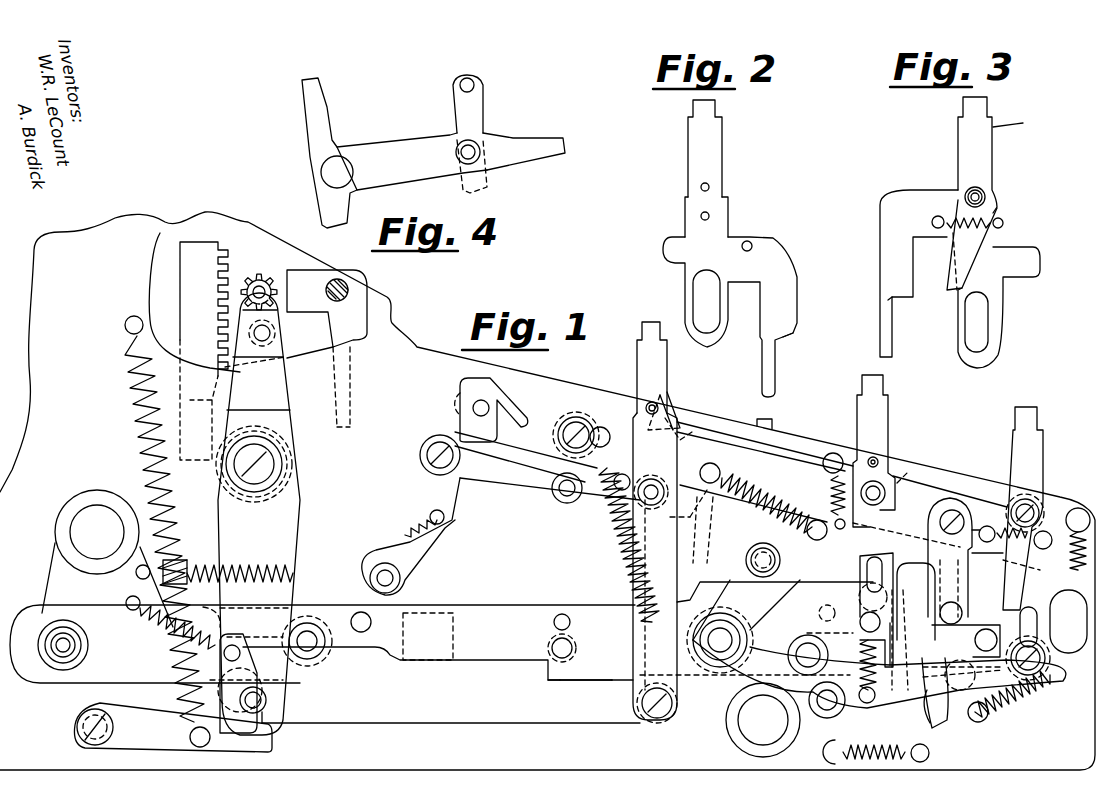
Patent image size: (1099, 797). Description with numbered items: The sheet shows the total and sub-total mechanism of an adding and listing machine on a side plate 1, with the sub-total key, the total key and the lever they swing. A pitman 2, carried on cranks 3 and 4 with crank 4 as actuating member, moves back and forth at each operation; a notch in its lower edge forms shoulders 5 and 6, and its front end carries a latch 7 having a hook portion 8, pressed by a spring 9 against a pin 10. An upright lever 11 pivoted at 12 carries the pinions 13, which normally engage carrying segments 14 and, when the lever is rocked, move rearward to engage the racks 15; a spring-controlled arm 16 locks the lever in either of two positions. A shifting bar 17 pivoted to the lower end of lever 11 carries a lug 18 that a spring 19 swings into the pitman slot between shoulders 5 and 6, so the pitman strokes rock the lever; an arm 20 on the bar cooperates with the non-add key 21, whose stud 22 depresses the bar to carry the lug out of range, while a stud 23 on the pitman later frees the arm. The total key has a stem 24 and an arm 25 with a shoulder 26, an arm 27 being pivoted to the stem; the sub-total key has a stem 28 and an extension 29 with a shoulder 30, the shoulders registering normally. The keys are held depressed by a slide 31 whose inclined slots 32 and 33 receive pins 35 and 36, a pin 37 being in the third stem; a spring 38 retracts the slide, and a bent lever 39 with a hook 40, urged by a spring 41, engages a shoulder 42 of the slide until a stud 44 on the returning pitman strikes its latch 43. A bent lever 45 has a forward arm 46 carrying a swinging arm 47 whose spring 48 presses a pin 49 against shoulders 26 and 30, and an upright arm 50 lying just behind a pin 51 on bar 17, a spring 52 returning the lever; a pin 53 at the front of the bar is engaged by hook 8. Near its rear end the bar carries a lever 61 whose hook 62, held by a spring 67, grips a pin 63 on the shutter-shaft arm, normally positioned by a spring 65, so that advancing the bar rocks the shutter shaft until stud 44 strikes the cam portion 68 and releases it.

In FIG. 1, the side plate 1 is at (547, 491).
In FIG. 1, the pitman 2 is at (441, 620).
In FIG. 1, the crank 3 is at (107, 558).
In FIG. 1, the crank 4 is at (720, 702).
In FIG. 1, the shoulder 5 is at (555, 692).
In FIG. 1, the shoulder 6 is at (636, 680).
In FIG. 1, the latch 7 is at (935, 696).
In FIG. 1, the hook portion 8 is at (932, 725).
In FIG. 1, the spring 9 is at (857, 665).
In FIG. 1, the pin 10 is at (862, 620).
In FIG. 1, the upright lever 11 is at (287, 528).
In FIG. 1, the pivot 12 is at (275, 472).
In FIG. 1, the pinions 13 is at (273, 270).
In FIG. 1, the carrying segments 14 is at (312, 280).
In FIG. 1, the racks 15 is at (204, 351).
In FIG. 1, the spring-controlled arm 16 is at (173, 727).
In FIG. 1, the shifting bar 17 is at (335, 706).
In FIG. 1, the lug 18 is at (612, 682).
In FIG. 1, the spring 19 is at (628, 580).
In FIG. 1, the arm 20 is at (673, 590).
In FIG. 1, the non-add key 21 is at (640, 367).
In FIG. 1, the stud 22 is at (662, 488).
In FIG. 1, the stud 23 is at (557, 615).
In FIG. 3, the stem 24 is at (983, 150).
In FIG. 1, the stem 24 is at (1040, 452).
In FIG. 3, the arm 25 is at (887, 223).
In FIG. 3, the shoulder 26 is at (900, 298).
In FIG. 1, the shoulder 26 is at (962, 610).
In FIG. 3, the arm 27 is at (980, 243).
In FIG. 2, the stem 28 is at (710, 168).
In FIG. 1, the stem 28 is at (883, 422).
In FIG. 2, the extension 29 is at (785, 263).
In FIG. 1, the extension 29 is at (925, 518).
In FIG. 2, the shoulder 30 is at (783, 337).
In FIG. 1, the slide 31 is at (765, 498).
In FIG. 1, the inclined slot 32 is at (675, 425).
In FIG. 1, the inclined slot 33 is at (897, 483).
In FIG. 1, the pin 35 is at (658, 404).
In FIG. 1, the pin 36 is at (877, 460).
In FIG. 1, the pin 37 is at (1035, 503).
In FIG. 1, the spring 38 is at (772, 510).
In FIG. 1, the bent lever 39 is at (490, 473).
In FIG. 1, the hook portion 40 is at (610, 486).
In FIG. 1, the spring 41 is at (560, 473).
In FIG. 1, the shoulder 42 is at (617, 430).
In FIG. 1, the latch 43 is at (400, 593).
In FIG. 1, the stud 44 is at (360, 614).
In FIG. 4, the bent lever 45 is at (382, 148).
In FIG. 1, the bent lever 45 is at (867, 708).
In FIG. 4, the arm 46 is at (513, 147).
In FIG. 4, the swinging arm 47 is at (473, 117).
In FIG. 1, the spring 48 is at (1020, 690).
In FIG. 4, the pin 49 is at (473, 83).
In FIG. 1, the pin 49 is at (962, 612).
In FIG. 4, the upright arm 50 is at (307, 115).
In FIG. 1, the upright arm 50 is at (795, 620).
In FIG. 1, the pin 51 is at (823, 608).
In FIG. 1, the spring 52 is at (893, 750).
In FIG. 1, the pin 53 is at (982, 718).
In FIG. 1, the lever 61 is at (373, 660).
In FIG. 1, the hook portion 62 is at (205, 620).
In FIG. 1, the pin 63 is at (247, 647).
In FIG. 1, the spring 65 is at (157, 632).
In FIG. 1, the spring 67 is at (190, 567).
In FIG. 1, the cam portion 68 is at (403, 620).